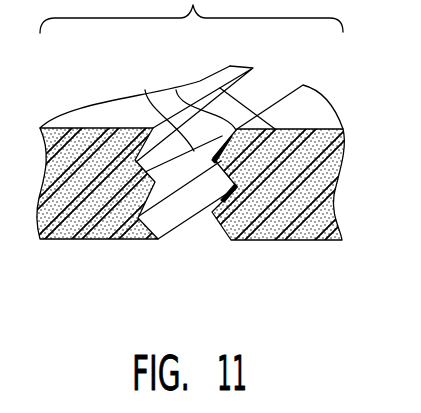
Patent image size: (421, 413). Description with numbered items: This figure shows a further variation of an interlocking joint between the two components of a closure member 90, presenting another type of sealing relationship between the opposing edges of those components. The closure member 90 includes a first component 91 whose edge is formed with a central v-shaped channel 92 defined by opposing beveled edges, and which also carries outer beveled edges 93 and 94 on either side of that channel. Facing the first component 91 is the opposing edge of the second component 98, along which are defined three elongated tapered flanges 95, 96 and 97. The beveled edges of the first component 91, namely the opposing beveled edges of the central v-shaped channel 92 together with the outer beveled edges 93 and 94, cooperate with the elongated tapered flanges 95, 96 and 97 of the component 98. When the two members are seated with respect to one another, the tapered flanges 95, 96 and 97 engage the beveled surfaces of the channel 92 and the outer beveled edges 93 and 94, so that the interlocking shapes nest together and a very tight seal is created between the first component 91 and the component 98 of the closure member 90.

The closure member 90 is at (210, 206).
The first component 91 is at (313, 113).
The central v-shaped channel 92 is at (214, 176).
The outer beveled edge 93 is at (179, 96).
The outer beveled edge 94 is at (213, 214).
The elongated tapered flange 95 is at (217, 90).
The elongated tapered flange 96 is at (146, 97).
The elongated tapered flange 97 is at (186, 222).
The component 98 is at (98, 103).